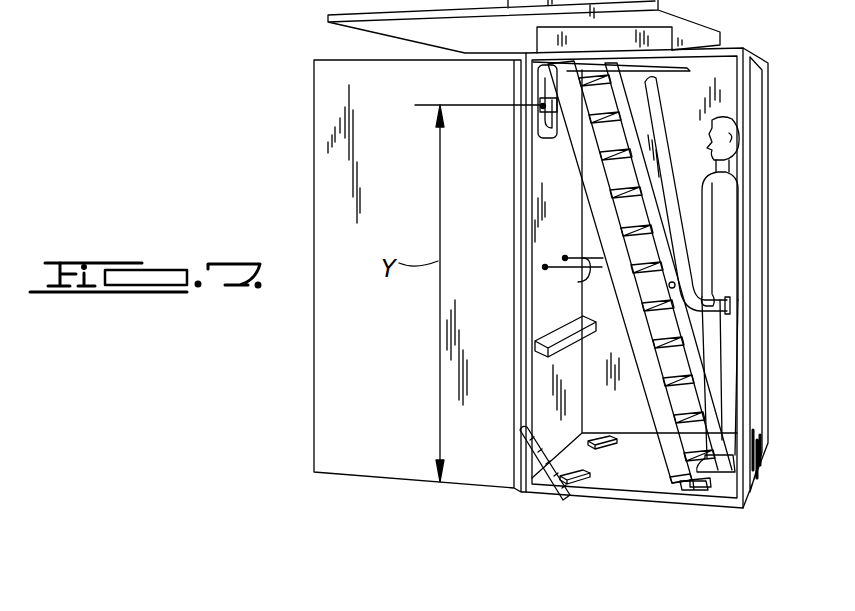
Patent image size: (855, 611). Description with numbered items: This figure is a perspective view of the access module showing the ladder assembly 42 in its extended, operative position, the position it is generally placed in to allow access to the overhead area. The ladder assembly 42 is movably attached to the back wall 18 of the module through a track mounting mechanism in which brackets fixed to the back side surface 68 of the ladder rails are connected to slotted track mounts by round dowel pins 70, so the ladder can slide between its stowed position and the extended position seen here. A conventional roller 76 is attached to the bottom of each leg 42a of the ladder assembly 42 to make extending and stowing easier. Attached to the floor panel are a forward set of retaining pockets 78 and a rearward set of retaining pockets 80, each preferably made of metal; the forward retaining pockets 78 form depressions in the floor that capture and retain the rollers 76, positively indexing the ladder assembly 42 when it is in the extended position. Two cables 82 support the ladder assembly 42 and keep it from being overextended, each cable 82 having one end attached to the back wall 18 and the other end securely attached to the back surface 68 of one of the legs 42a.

The back wall 18 is at (568, 173).
The ladder assembly 42 is at (683, 272).
The leg 42a is at (648, 373).
The back side surface 68 is at (620, 318).
The dowel pin 70 is at (542, 108).
The roller 76 is at (683, 488).
The forward retaining pockets 78 is at (705, 491).
The rearward retaining pockets 80 is at (617, 468).
The cables 82 is at (545, 268).